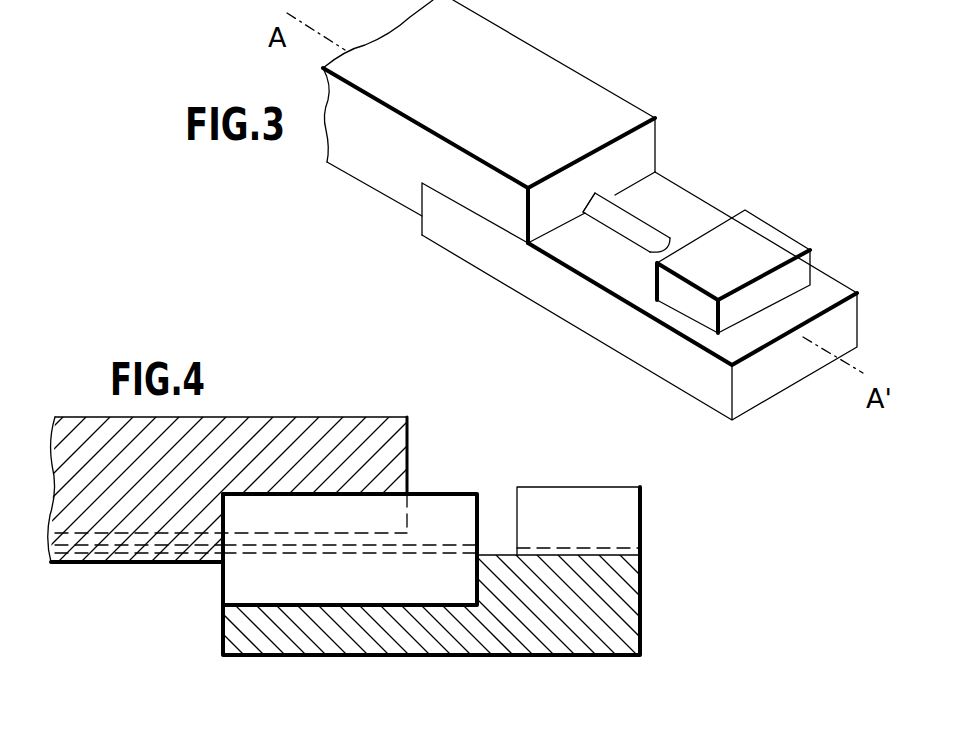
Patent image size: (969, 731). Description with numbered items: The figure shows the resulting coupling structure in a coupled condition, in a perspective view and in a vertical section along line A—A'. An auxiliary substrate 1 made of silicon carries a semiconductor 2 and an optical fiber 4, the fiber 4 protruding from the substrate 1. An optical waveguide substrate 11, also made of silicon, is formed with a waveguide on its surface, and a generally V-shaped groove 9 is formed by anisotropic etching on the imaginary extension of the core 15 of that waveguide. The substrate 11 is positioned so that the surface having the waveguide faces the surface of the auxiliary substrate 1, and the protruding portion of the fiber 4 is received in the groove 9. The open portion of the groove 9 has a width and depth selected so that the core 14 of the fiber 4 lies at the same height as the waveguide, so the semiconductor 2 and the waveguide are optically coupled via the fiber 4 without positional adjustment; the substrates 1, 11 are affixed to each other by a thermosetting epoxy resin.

In FIG. 3, the auxiliary substrate 1 is at (657, 357).
In FIG. 4, the auxiliary substrate 1 is at (612, 600).
In FIG. 3, the semiconductor 2 is at (770, 227).
In FIG. 4, the semiconductor 2 is at (558, 485).
In FIG. 3, the optical fiber 4 is at (617, 223).
In FIG. 4, the optical fiber 4 is at (440, 495).
In FIG. 3, the groove 9 is at (607, 193).
In FIG. 3, the optical waveguide substrate 11 is at (560, 77).
In FIG. 4, the optical waveguide substrate 11 is at (277, 415).
In FIG. 4, the core 14 is at (240, 552).
In FIG. 4, the core 15 is at (93, 553).